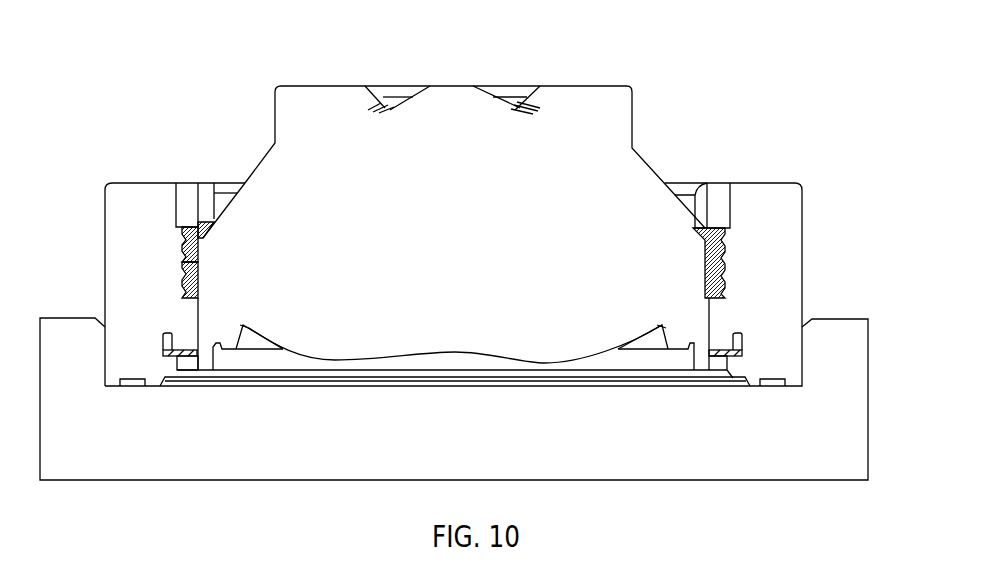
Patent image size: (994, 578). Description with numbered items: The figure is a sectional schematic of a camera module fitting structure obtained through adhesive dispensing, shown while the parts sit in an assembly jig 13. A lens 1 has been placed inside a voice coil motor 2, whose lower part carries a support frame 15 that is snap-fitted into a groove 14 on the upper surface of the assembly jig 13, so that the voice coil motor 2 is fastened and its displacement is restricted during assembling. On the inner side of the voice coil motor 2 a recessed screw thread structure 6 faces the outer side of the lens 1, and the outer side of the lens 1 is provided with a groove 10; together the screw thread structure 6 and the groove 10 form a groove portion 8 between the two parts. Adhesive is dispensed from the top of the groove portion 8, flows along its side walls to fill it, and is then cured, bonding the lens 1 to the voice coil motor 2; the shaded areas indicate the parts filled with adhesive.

The lens 1 is at (598, 86).
The voice coil motor 2 is at (777, 183).
The screw thread structure 6 is at (176, 228).
The groove portion 8 is at (200, 246).
The groove 10 is at (200, 278).
The assembly jig 13 is at (830, 318).
The groove 14 is at (770, 385).
The support frame 15 is at (770, 385).